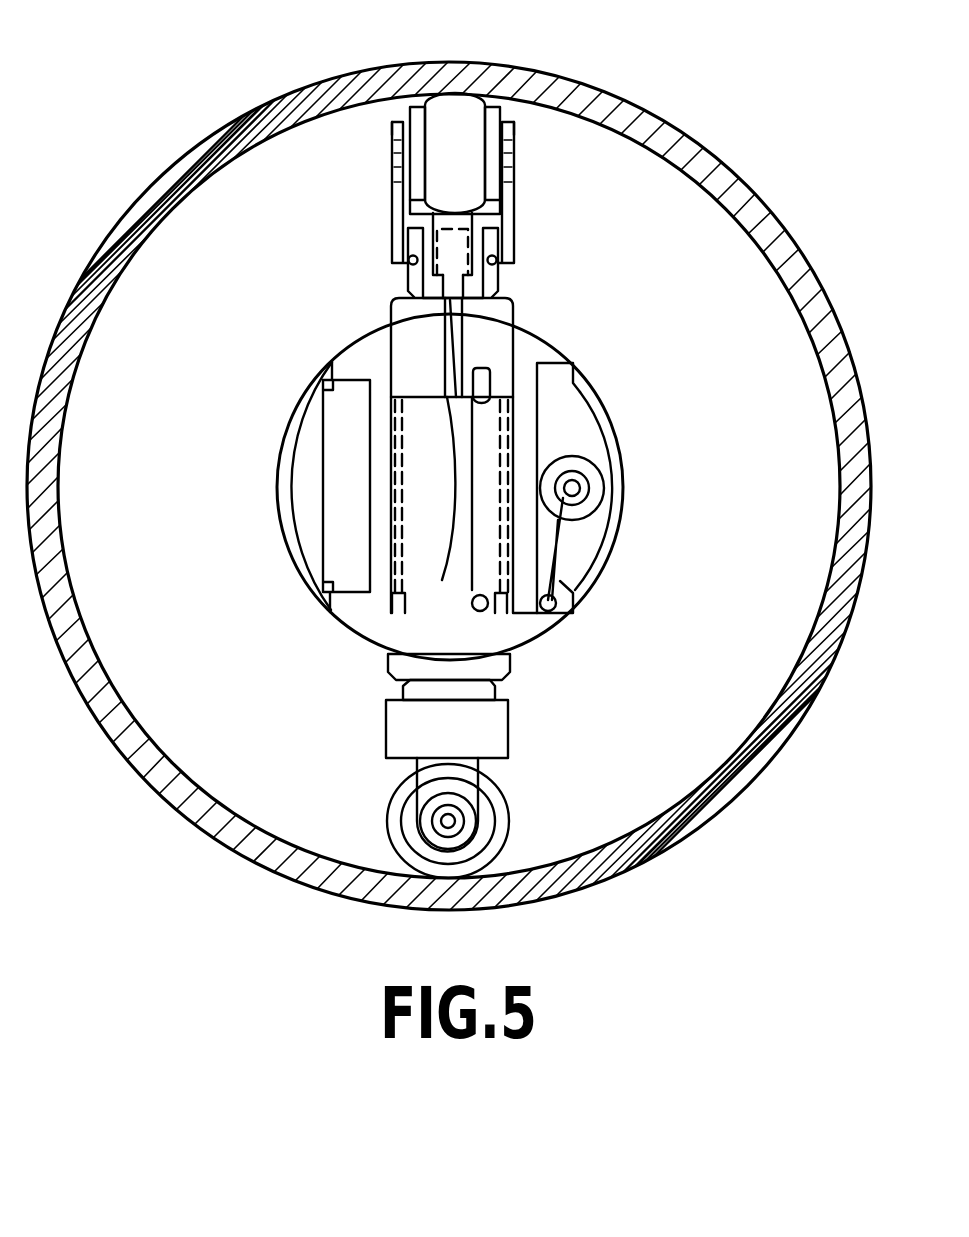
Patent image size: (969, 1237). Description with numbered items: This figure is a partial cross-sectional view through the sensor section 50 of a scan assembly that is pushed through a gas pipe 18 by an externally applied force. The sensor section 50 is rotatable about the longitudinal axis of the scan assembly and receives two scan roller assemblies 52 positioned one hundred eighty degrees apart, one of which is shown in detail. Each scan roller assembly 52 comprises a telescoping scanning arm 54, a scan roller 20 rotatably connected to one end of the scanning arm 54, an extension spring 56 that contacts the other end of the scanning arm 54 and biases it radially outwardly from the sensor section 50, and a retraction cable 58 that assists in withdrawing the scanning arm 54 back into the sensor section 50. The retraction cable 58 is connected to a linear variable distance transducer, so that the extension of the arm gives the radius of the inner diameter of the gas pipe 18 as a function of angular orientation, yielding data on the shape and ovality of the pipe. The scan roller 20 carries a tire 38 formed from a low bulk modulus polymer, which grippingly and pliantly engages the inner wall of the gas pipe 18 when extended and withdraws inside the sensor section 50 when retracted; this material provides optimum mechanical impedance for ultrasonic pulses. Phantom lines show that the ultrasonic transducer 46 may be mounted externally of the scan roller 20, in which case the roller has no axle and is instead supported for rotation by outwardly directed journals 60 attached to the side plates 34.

The gas pipe 18 is at (722, 188).
The scan roller 20 is at (460, 131).
The side plates 34 is at (506, 212).
The tire 38 is at (445, 175).
The ultrasonic transducer 46 is at (457, 245).
The sensor section 50 is at (615, 480).
The scan roller assembly 52 is at (505, 282).
The telescoping scanning arm 54 is at (510, 307).
The extension spring 56 is at (506, 448).
The retraction cable 58 is at (563, 547).
The journals 60 is at (503, 167).